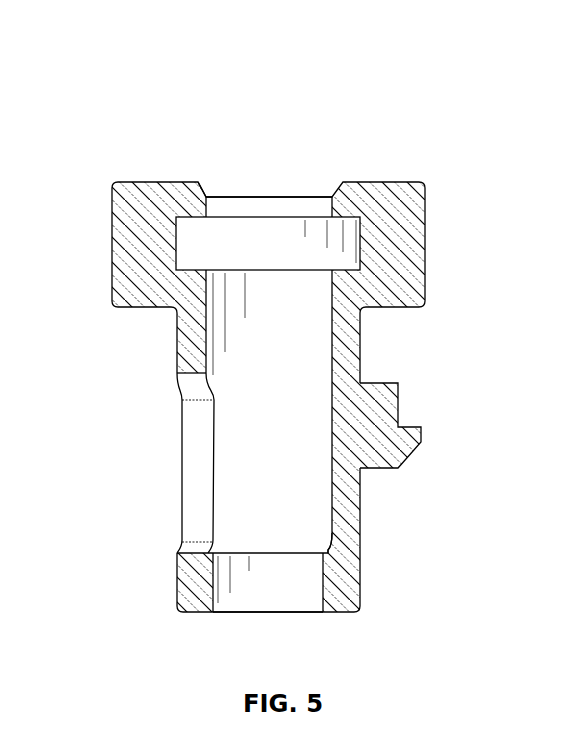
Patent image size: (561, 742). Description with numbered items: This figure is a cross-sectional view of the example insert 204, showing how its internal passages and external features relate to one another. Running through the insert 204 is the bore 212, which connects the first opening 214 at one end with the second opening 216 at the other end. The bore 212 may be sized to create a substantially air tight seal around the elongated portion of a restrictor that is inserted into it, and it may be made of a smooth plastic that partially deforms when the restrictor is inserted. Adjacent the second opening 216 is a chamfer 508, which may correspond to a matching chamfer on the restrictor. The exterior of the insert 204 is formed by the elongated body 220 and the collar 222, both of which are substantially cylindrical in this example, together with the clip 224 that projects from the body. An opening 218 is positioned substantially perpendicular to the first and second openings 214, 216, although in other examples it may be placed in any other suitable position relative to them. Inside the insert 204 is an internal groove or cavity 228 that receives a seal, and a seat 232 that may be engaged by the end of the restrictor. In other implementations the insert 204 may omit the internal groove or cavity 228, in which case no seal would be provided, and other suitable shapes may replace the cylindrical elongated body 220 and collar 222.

The insert 204 is at (106, 82).
The chamfer 508 is at (200, 184).
The second opening 216 is at (248, 190).
The collar 222 is at (405, 265).
The internal groove or cavity 228 is at (195, 242).
The bore 212 is at (267, 457).
The opening 218 is at (192, 507).
The clip 224 is at (398, 450).
The seat 232 is at (327, 550).
The elongated body 220 is at (345, 580).
The first opening 214 is at (243, 595).